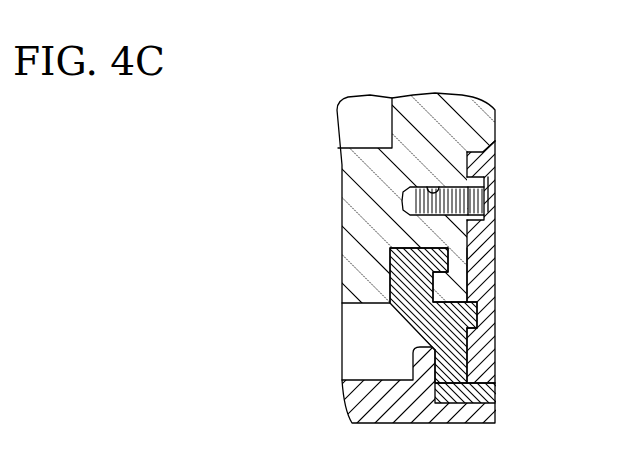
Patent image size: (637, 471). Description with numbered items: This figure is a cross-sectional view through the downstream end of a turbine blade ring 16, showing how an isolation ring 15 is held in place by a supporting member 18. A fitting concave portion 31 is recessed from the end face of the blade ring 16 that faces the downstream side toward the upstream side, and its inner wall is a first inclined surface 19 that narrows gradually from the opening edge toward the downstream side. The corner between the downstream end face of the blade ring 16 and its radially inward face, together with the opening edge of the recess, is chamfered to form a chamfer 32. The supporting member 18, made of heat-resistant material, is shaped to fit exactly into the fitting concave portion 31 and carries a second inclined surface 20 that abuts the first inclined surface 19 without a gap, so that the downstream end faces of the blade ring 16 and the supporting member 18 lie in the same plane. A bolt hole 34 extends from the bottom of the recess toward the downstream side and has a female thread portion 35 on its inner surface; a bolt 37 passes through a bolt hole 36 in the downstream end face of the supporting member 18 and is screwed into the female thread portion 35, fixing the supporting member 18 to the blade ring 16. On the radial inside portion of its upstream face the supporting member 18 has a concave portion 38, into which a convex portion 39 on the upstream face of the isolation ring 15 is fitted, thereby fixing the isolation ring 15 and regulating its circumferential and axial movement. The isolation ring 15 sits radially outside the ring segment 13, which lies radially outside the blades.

The ring segment 13 is at (496, 412).
The isolation ring 15 is at (496, 393).
The blade ring 16 is at (417, 130).
The supporting member 18 is at (492, 253).
The first inclined surface 19 is at (482, 146).
The second inclined surface 20 is at (496, 155).
The fitting concave portion 31 is at (467, 290).
The chamfer 32 is at (489, 146).
The bolt hole 34 is at (449, 190).
The female thread portion 35 is at (438, 60).
The bolt hole 36 is at (486, 214).
The bolt 37 is at (486, 183).
The concave portion 38 is at (478, 297).
The convex portion 39 is at (478, 320).